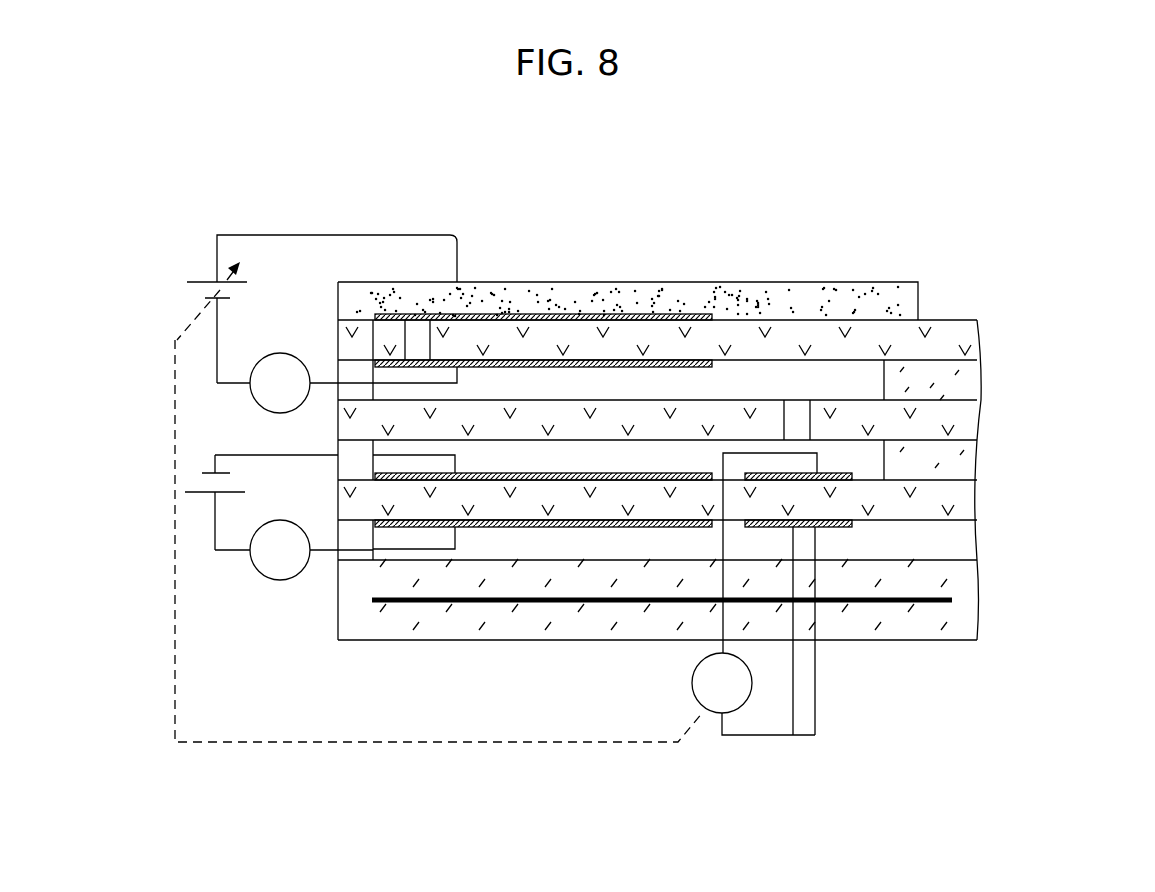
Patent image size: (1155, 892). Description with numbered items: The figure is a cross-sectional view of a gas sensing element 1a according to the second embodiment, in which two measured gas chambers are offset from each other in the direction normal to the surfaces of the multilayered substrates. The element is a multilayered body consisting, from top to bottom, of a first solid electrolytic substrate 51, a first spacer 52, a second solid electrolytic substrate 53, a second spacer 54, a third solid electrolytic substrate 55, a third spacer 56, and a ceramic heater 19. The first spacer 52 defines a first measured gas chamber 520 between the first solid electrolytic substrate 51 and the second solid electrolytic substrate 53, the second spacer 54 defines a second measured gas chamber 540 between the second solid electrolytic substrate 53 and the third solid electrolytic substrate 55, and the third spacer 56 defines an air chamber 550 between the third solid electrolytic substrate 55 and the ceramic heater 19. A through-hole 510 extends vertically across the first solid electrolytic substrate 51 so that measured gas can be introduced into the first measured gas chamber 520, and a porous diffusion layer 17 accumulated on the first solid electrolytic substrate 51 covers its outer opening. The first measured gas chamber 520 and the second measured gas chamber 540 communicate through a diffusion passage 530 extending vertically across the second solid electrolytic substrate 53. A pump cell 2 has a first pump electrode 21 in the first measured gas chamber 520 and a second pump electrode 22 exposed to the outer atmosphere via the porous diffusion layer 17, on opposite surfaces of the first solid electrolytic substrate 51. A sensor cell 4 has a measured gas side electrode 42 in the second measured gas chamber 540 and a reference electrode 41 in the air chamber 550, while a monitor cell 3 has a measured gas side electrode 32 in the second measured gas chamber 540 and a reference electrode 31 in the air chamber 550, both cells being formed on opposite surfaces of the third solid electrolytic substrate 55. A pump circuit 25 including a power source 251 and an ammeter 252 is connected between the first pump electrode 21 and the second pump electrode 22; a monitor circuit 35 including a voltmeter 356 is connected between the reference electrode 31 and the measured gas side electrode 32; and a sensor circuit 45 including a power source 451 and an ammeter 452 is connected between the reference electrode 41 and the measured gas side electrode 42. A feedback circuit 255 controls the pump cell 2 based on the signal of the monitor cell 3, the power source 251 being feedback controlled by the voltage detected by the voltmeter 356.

The gas sensing element 1a is at (987, 243).
The pump cell 2 is at (567, 298).
The monitor cell 3 is at (851, 545).
The sensor cell 4 is at (516, 546).
The porous diffusion layer 17 is at (877, 298).
The ceramic heater 19 is at (993, 557).
The first pump electrode 21 is at (692, 360).
The second pump electrode 22 is at (627, 314).
The pump circuit 25 is at (327, 235).
The reference electrode 31 is at (790, 735).
The measured gas side electrode 32 is at (830, 473).
The monitor circuit 35 is at (743, 737).
The reference electrode 41 is at (575, 528).
The measured gas side electrode 42 is at (642, 480).
The sensor circuit 45 is at (227, 553).
The first solid electrolytic substrate 51 is at (367, 340).
The first spacer 52 is at (353, 383).
The second solid electrolytic substrate 53 is at (360, 428).
The second spacer 54 is at (347, 465).
The third solid electrolytic substrate 55 is at (403, 500).
The third spacer 56 is at (350, 530).
The power source 251 is at (200, 282).
The ammeter 252 is at (265, 358).
The feedback circuit 255 is at (457, 742).
The voltmeter 356 is at (712, 715).
The power source 451 is at (193, 488).
The ammeter 452 is at (280, 580).
The through-hole 510 is at (415, 335).
The first measured gas chamber 520 is at (513, 382).
The diffusion passage 530 is at (795, 422).
The second measured gas chamber 540 is at (855, 460).
The air chamber 550 is at (938, 538).